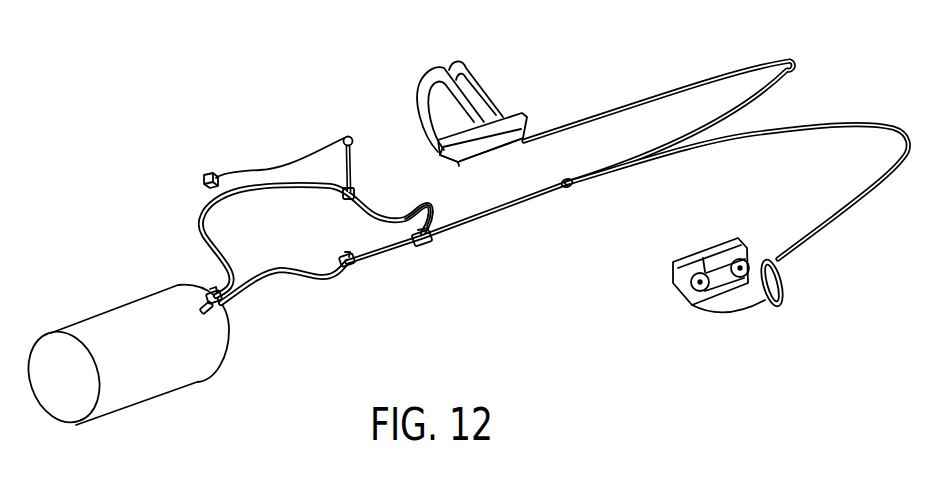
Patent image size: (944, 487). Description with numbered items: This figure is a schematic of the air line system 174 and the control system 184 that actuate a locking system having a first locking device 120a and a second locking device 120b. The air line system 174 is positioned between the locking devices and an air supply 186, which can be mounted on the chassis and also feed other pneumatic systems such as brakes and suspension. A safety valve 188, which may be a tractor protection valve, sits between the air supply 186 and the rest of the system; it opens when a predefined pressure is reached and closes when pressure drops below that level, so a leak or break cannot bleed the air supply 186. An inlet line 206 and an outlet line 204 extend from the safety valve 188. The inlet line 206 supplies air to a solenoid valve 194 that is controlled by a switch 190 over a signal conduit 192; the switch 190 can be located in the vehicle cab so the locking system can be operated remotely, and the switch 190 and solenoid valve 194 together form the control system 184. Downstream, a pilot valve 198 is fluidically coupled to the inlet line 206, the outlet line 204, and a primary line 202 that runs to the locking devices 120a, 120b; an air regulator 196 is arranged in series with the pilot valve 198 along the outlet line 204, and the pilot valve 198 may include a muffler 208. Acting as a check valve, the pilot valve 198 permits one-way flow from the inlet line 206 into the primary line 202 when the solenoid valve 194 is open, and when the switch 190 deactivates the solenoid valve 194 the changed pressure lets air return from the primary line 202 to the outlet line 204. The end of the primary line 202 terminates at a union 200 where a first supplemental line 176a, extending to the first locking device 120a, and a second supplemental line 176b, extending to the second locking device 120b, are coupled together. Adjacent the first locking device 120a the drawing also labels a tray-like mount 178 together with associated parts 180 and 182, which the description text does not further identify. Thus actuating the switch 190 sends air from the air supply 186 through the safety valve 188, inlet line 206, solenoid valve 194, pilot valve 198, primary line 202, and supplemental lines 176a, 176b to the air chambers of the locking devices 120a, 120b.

The air line system 174 is at (570, 296).
The first supplemental line 176a is at (693, 82).
The second supplemental line 176b is at (833, 124).
The tray 178 is at (523, 112).
The tray bottom 180 is at (483, 159).
The tray leg 182 is at (457, 163).
The control system 184 is at (263, 153).
The air supply 186 is at (110, 307).
The safety valve 188 is at (210, 293).
The switch 190 is at (203, 179).
The signal conduit 192 is at (285, 167).
The solenoid valve 194 is at (343, 143).
The air regulator 196 is at (357, 260).
The pilot valve 198 is at (418, 228).
The union 200 is at (568, 189).
The primary line 202 is at (512, 208).
The outlet line 204 is at (287, 273).
The inlet line 206 is at (248, 198).
The muffler 208 is at (430, 245).
The first locking device 120a is at (446, 105).
The second locking device 120b is at (730, 303).